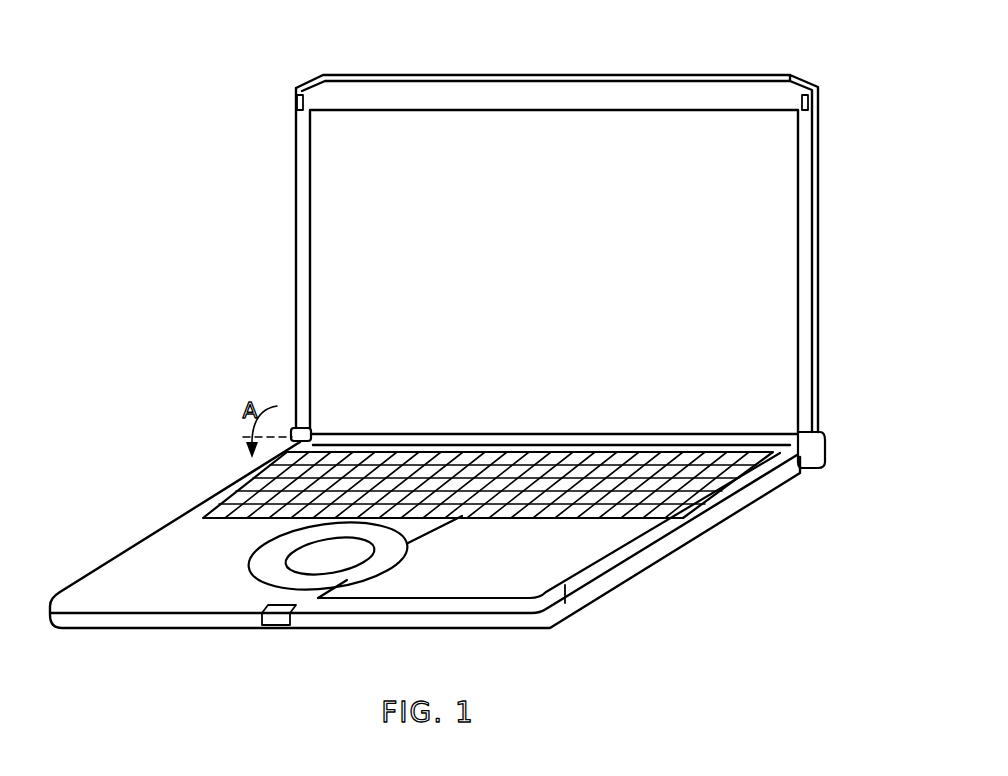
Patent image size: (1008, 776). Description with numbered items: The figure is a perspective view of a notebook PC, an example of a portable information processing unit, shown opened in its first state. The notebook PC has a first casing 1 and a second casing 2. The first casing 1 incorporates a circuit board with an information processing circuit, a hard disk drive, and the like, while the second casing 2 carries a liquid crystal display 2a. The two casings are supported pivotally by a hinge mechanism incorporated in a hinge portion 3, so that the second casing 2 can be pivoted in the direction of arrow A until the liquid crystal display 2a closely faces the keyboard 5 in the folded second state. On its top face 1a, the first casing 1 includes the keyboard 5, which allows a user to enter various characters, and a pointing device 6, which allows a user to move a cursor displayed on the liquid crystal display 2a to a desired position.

The first casing 1 is at (612, 573).
The top face 1a is at (118, 582).
The second casing 2 is at (690, 75).
The liquid crystal display 2a is at (545, 150).
The hinge portion 3 is at (826, 462).
The keyboard 5 is at (232, 497).
The pointing device 6 is at (303, 560).